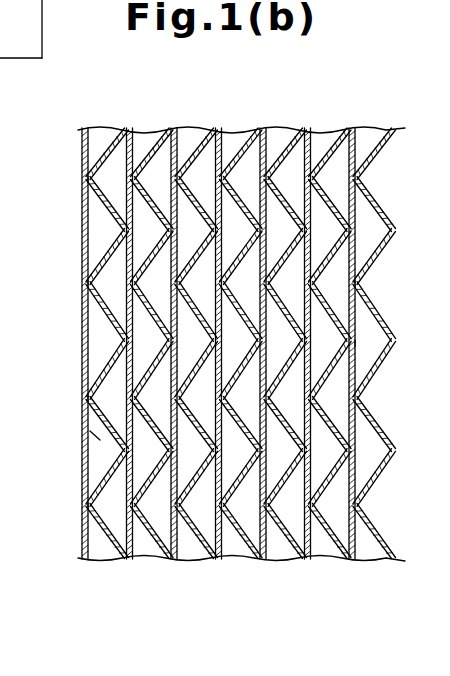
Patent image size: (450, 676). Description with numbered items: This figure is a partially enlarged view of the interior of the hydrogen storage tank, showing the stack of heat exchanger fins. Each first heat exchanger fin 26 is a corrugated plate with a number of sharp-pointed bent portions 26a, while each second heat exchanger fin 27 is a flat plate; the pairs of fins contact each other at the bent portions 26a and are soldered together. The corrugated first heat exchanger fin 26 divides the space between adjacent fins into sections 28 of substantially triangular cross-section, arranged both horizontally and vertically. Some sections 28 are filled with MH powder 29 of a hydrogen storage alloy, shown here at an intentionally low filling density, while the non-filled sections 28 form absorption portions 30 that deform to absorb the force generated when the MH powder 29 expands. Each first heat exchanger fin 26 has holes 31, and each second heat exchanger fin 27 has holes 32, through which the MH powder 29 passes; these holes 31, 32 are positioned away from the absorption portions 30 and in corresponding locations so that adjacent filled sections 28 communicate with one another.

The first heat exchanger fin 26 is at (198, 130).
The second heat exchanger fin 27 is at (82, 222).
The section 28 is at (84, 196).
The MH powder 29 is at (97, 436).
The absorption portion 30 is at (108, 368).
The hole 31 is at (358, 287).
The hole 32 is at (85, 283).
The bent portion 26a is at (86, 398).